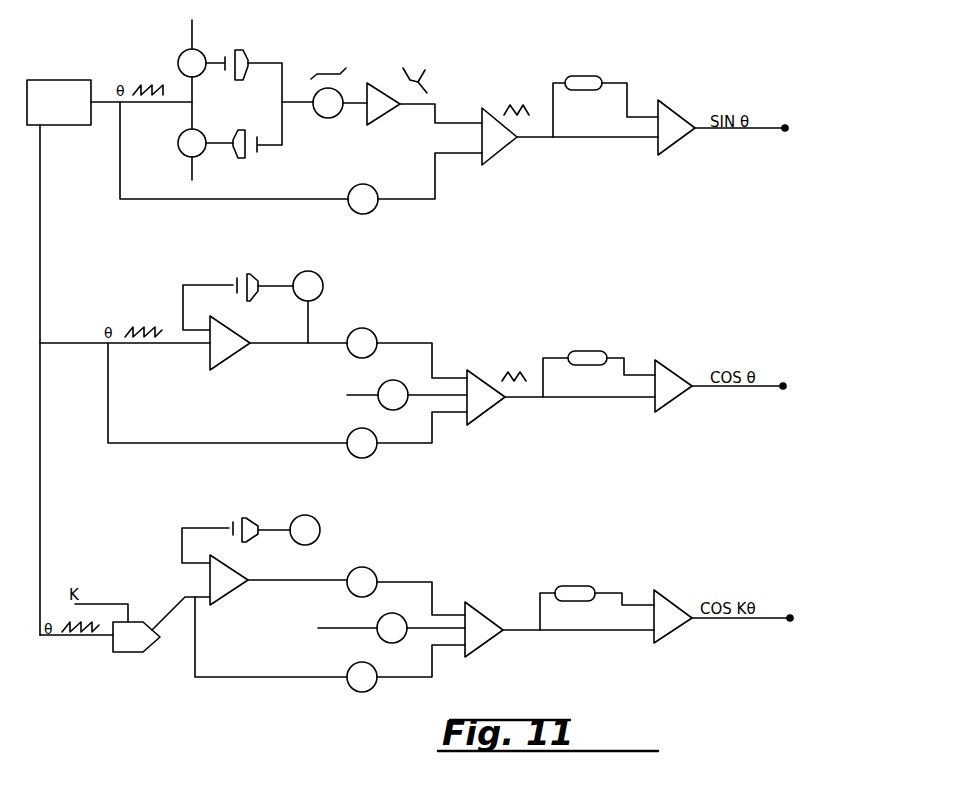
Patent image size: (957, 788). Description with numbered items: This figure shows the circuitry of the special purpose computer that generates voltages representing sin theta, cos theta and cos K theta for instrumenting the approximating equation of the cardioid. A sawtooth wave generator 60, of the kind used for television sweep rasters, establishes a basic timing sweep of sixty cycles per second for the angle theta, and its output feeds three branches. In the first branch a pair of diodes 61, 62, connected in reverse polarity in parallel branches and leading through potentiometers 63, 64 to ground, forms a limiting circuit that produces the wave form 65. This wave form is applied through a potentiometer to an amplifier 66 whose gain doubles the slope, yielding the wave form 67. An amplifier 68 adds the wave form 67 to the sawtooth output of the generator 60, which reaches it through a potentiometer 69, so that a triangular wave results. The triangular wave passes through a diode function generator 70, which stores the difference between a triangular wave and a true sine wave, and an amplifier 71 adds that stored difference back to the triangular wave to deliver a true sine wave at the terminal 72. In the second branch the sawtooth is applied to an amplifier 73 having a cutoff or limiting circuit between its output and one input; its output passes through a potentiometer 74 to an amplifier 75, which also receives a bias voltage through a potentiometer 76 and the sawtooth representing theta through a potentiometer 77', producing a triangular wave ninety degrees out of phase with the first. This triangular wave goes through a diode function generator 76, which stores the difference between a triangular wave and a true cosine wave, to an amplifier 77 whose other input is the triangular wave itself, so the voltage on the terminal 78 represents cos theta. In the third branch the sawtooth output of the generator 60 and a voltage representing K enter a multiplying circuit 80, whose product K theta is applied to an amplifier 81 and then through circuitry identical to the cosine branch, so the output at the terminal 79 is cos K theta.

The sawtooth wave generator 60 is at (81, 78).
The diode 61 is at (245, 53).
The diode 62 is at (243, 160).
The potentiometer 63 is at (182, 53).
The potentiometer 64 is at (200, 156).
The wave form 65 is at (322, 76).
The amplifier 66 is at (373, 85).
The wave form 67 is at (424, 74).
The amplifier 68 is at (489, 160).
The potentiometer 69 is at (372, 210).
The diode function generator 70 is at (598, 76).
The amplifier 71 is at (672, 110).
The terminal 72 is at (785, 125).
The amplifier 73 is at (217, 362).
The potentiometer 74 is at (372, 333).
The amplifier 75 is at (470, 370).
The potentiometer / diode function generator 76 is at (378, 404).
The amplifier 77 is at (680, 377).
The potentiometer 77' is at (356, 457).
The terminal 78 is at (783, 382).
The terminal 79 is at (790, 615).
The multiplying circuit 80 is at (143, 650).
The amplifier 81 is at (218, 592).